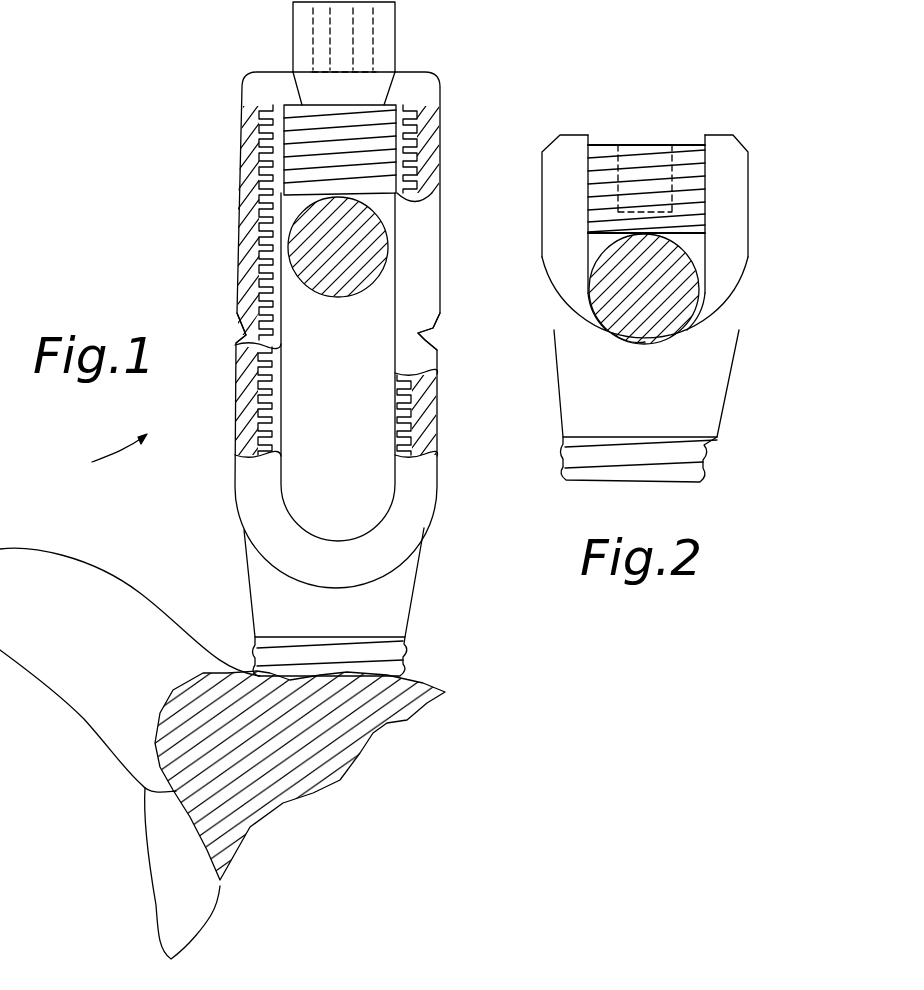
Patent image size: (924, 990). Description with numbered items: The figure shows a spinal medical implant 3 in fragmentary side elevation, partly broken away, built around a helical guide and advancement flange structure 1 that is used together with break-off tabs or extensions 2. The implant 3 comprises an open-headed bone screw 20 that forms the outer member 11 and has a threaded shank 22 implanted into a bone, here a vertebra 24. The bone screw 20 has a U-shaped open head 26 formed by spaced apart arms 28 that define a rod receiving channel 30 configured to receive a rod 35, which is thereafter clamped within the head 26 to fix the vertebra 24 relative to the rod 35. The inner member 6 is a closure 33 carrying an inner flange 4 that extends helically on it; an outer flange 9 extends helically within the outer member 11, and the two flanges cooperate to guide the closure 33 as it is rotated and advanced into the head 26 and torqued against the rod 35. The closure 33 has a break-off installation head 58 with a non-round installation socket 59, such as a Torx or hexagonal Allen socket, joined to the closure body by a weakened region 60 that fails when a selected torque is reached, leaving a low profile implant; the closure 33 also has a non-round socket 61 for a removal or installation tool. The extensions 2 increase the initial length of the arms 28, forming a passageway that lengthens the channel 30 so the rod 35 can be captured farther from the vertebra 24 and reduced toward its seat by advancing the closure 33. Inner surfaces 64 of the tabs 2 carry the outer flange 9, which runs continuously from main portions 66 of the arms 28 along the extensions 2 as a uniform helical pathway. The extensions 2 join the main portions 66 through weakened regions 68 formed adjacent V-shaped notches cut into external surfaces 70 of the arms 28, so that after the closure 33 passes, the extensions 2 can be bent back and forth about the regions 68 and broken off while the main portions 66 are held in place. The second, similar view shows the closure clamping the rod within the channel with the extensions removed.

In FIG. 1, the helical guide and advancement flange structure 1 is at (300, 120).
In FIG. 2, the helical guide and advancement flange structure 1 is at (640, 155).
In FIG. 1, the break-off tabs or extensions 2 is at (239, 215).
In FIG. 1, the medical implant 3 is at (107, 455).
In FIG. 1, the inner flange 4 is at (418, 128).
In FIG. 1, the inner member 6 is at (420, 192).
In FIG. 2, the inner member 6 is at (690, 185).
In FIG. 1, the outer flange 9 is at (282, 418).
In FIG. 1, the outer member 11 is at (240, 405).
In FIG. 2, the outer member 11 is at (720, 305).
In FIG. 1, the open-headed bone screw 20 is at (420, 583).
In FIG. 2, the open-headed bone screw 20 is at (573, 410).
In FIG. 1, the threaded shank 22 is at (410, 655).
In FIG. 2, the threaded shank 22 is at (710, 450).
In FIG. 1, the vertebra 24 is at (370, 770).
In FIG. 1, the U-shaped open head 26 is at (423, 488).
In FIG. 2, the U-shaped open head 26 is at (693, 357).
In FIG. 1, the arms 28 is at (245, 360).
In FIG. 2, the arms 28 is at (560, 165).
In FIG. 1, the rod receiving channel 30 is at (330, 540).
In FIG. 2, the rod receiving channel 30 is at (625, 330).
In FIG. 1, the closure 33 is at (298, 155).
In FIG. 2, the closure 33 is at (600, 213).
In FIG. 1, the rod 35 is at (378, 258).
In FIG. 2, the rod 35 is at (600, 290).
In FIG. 1, the break-off installation head 58 is at (385, 38).
In FIG. 1, the non-round installation socket 59 is at (323, 46).
In FIG. 1, the weakened region 60 is at (385, 103).
In FIG. 2, the non-round socket 61 is at (598, 178).
In FIG. 1, the inner surfaces 64 is at (393, 318).
In FIG. 1, the main portions 66 is at (243, 445).
In FIG. 2, the main portions 66 is at (735, 232).
In FIG. 1, the weakened regions 68 is at (410, 345).
In FIG. 1, the external surfaces 70 is at (242, 270).